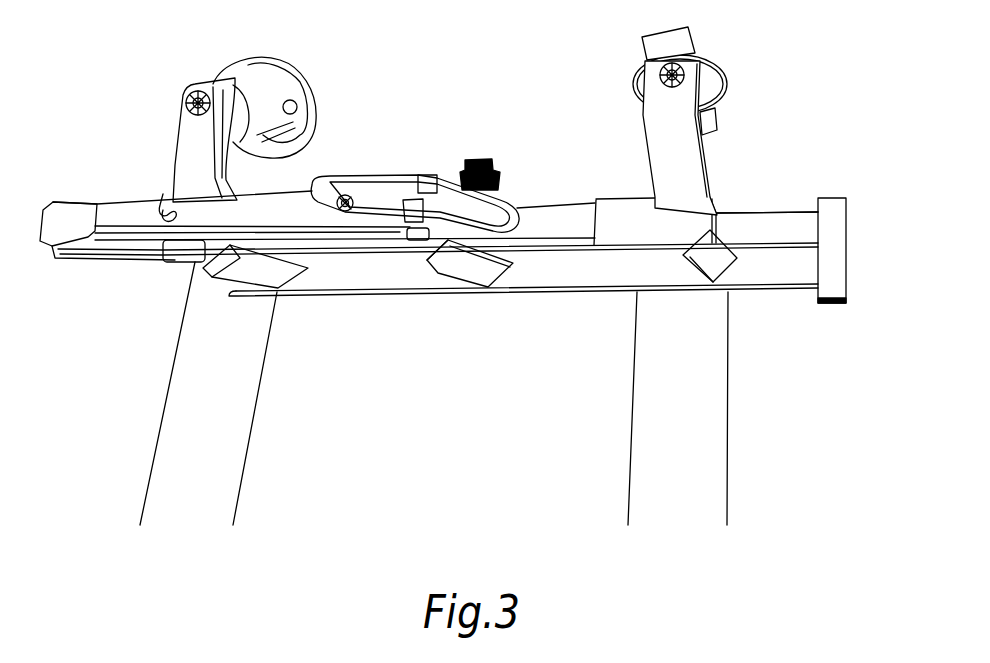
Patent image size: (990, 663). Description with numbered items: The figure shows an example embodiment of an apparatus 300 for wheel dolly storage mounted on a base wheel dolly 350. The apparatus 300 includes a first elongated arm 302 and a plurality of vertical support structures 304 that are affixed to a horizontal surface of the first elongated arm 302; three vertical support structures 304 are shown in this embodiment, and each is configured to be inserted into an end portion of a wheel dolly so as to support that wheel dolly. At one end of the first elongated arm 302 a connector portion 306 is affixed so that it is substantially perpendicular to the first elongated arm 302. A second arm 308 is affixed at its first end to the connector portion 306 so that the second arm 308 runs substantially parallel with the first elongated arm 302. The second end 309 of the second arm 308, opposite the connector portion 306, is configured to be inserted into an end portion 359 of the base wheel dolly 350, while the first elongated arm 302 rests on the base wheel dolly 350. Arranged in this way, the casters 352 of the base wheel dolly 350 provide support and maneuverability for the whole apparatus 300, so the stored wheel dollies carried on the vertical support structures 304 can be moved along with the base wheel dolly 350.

The apparatus 300 is at (850, 217).
The first elongated arm 302 is at (763, 282).
The vertical support structures 304 is at (243, 270).
The connector portion 306 is at (826, 242).
The second arm 308 is at (777, 213).
The second end 309 is at (738, 222).
The base wheel dolly 350 is at (122, 214).
The casters 352 is at (215, 78).
The end portion 359 is at (630, 207).